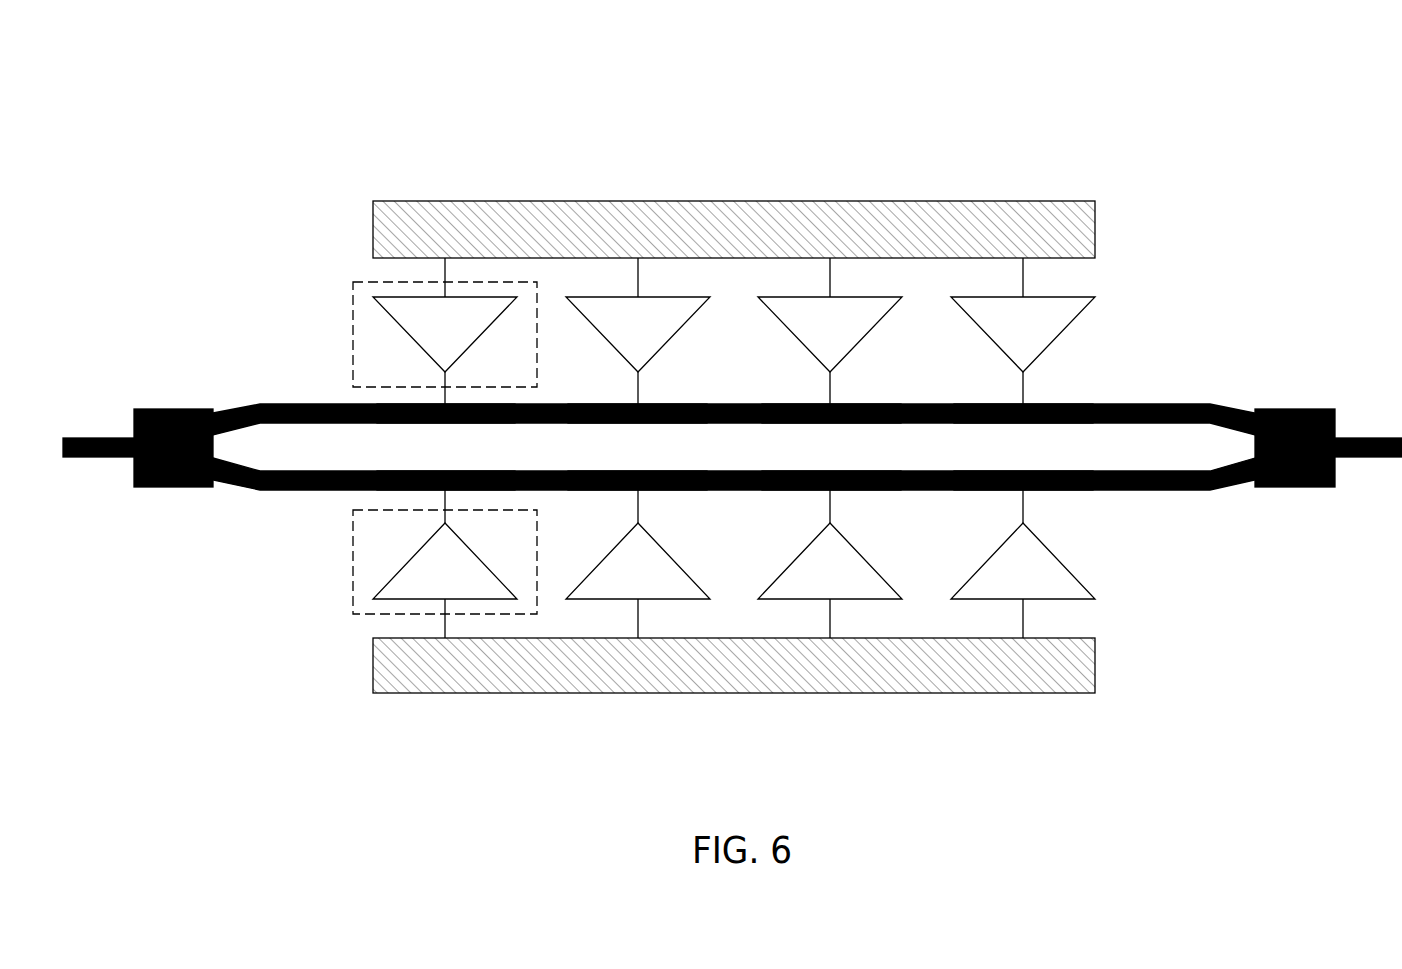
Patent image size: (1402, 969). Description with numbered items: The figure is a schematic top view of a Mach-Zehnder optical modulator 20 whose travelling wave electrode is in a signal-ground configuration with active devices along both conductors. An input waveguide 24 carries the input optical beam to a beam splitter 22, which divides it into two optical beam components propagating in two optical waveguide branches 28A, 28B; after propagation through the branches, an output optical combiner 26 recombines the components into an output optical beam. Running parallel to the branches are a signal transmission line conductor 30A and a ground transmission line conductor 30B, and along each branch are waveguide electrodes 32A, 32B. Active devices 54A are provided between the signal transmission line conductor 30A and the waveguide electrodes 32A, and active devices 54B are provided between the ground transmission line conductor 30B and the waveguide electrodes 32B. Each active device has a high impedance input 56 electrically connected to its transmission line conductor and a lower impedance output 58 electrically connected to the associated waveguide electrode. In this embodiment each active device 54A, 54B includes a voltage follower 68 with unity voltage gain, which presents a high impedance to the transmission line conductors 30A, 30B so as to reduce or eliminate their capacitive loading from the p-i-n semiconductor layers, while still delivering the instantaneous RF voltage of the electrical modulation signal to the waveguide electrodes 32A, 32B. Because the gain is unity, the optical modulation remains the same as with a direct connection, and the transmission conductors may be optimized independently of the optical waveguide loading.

The Mach-Zehnder optical modulator 20 is at (737, 92).
The beam splitter 22 is at (167, 409).
The input waveguide 24 is at (97, 458).
The output optical combiner 26 is at (1308, 487).
The optical waveguide branch 28A is at (1181, 404).
The optical waveguide branch 28B is at (1183, 490).
The signal transmission line conductor 30A is at (572, 201).
The ground transmission line conductor 30B is at (607, 694).
The waveguide electrode 32A is at (1072, 412).
The waveguide electrode 32B is at (1072, 483).
The active device 54A is at (353, 297).
The active device 54B is at (353, 596).
The input 56 is at (447, 283).
The output 58 is at (445, 385).
The voltage follower 68 is at (412, 335).